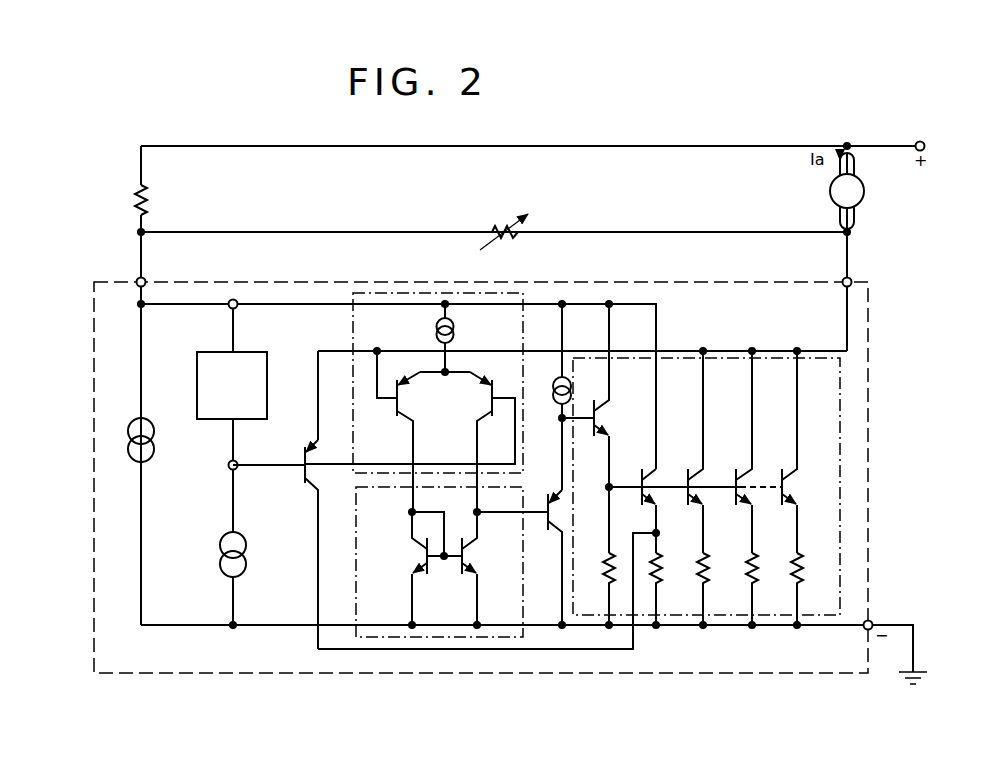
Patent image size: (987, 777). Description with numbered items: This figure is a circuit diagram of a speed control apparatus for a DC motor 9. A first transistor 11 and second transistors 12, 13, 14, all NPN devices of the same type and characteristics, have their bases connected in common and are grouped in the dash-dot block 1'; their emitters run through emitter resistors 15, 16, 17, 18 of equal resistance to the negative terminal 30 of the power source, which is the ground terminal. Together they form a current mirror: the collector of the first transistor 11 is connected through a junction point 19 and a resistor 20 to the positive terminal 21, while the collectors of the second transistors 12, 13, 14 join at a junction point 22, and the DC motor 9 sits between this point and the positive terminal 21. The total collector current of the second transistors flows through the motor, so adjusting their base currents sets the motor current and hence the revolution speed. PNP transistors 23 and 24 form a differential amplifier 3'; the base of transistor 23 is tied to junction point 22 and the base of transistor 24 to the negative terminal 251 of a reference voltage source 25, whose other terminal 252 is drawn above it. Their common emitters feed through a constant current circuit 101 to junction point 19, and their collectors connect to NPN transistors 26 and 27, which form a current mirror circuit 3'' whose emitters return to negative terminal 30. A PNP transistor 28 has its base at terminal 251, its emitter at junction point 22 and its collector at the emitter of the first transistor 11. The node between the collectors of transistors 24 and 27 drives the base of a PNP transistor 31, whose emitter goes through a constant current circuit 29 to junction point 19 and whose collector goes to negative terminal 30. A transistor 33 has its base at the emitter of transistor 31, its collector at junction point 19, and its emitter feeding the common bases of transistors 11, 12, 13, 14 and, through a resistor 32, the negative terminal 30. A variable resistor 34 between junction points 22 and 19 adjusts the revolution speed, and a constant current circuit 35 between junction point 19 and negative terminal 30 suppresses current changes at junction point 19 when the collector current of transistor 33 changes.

The drive current switching circuit 1' is at (743, 488).
The differential amplifier 3' is at (420, 379).
The current mirror circuit 3'' is at (439, 600).
The DC motor 9 is at (865, 191).
The first transistor 11 is at (648, 468).
The second transistor 12 is at (697, 468).
The second transistor 13 is at (745, 468).
The second transistor 14 is at (791, 468).
The resistor 15 is at (662, 570).
The resistor 16 is at (709, 570).
The resistor 17 is at (758, 570).
The resistor 18 is at (803, 570).
The junction point 19 is at (136, 281).
The resistor 20 is at (135, 208).
The positive terminal 21 is at (925, 145).
The junction point 22 is at (852, 280).
The transistor 23 is at (397, 402).
The transistor 24 is at (488, 402).
The reference voltage source 25 is at (200, 360).
The NPN transistor 26 is at (413, 556).
The NPN transistor 27 is at (470, 556).
The PNP transistor 28 is at (305, 472).
The constant current circuit 29 is at (556, 391).
The negative terminal 30 is at (872, 620).
The PNP transistor 31 is at (556, 496).
The resistor 32 is at (606, 552).
The transistor 33 is at (604, 410).
The variable resistor 34 is at (500, 228).
The constant current circuit 35 is at (128, 440).
The constant current circuit 101 is at (436, 330).
The negative terminal 251 is at (228, 465).
The input terminal of reference voltage source 252 is at (238, 306).